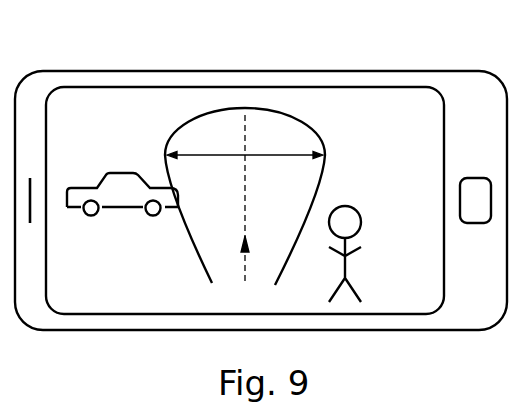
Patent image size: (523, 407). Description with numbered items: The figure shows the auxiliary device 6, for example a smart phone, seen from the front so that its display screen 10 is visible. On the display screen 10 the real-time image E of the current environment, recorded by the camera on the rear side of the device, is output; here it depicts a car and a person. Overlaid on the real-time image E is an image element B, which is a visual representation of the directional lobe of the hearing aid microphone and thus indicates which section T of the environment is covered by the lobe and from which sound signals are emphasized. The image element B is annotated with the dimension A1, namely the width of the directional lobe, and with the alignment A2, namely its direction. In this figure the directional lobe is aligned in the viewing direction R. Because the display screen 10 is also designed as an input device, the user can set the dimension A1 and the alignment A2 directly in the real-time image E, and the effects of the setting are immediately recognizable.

The auxiliary device 6 is at (62, 71).
The display screen 10 is at (137, 87).
The real-time image E is at (76, 134).
The image element B is at (315, 128).
The dimension A1 is at (230, 155).
The alignment A2 is at (245, 138).
The viewing direction R is at (245, 272).
The section T is at (326, 163).